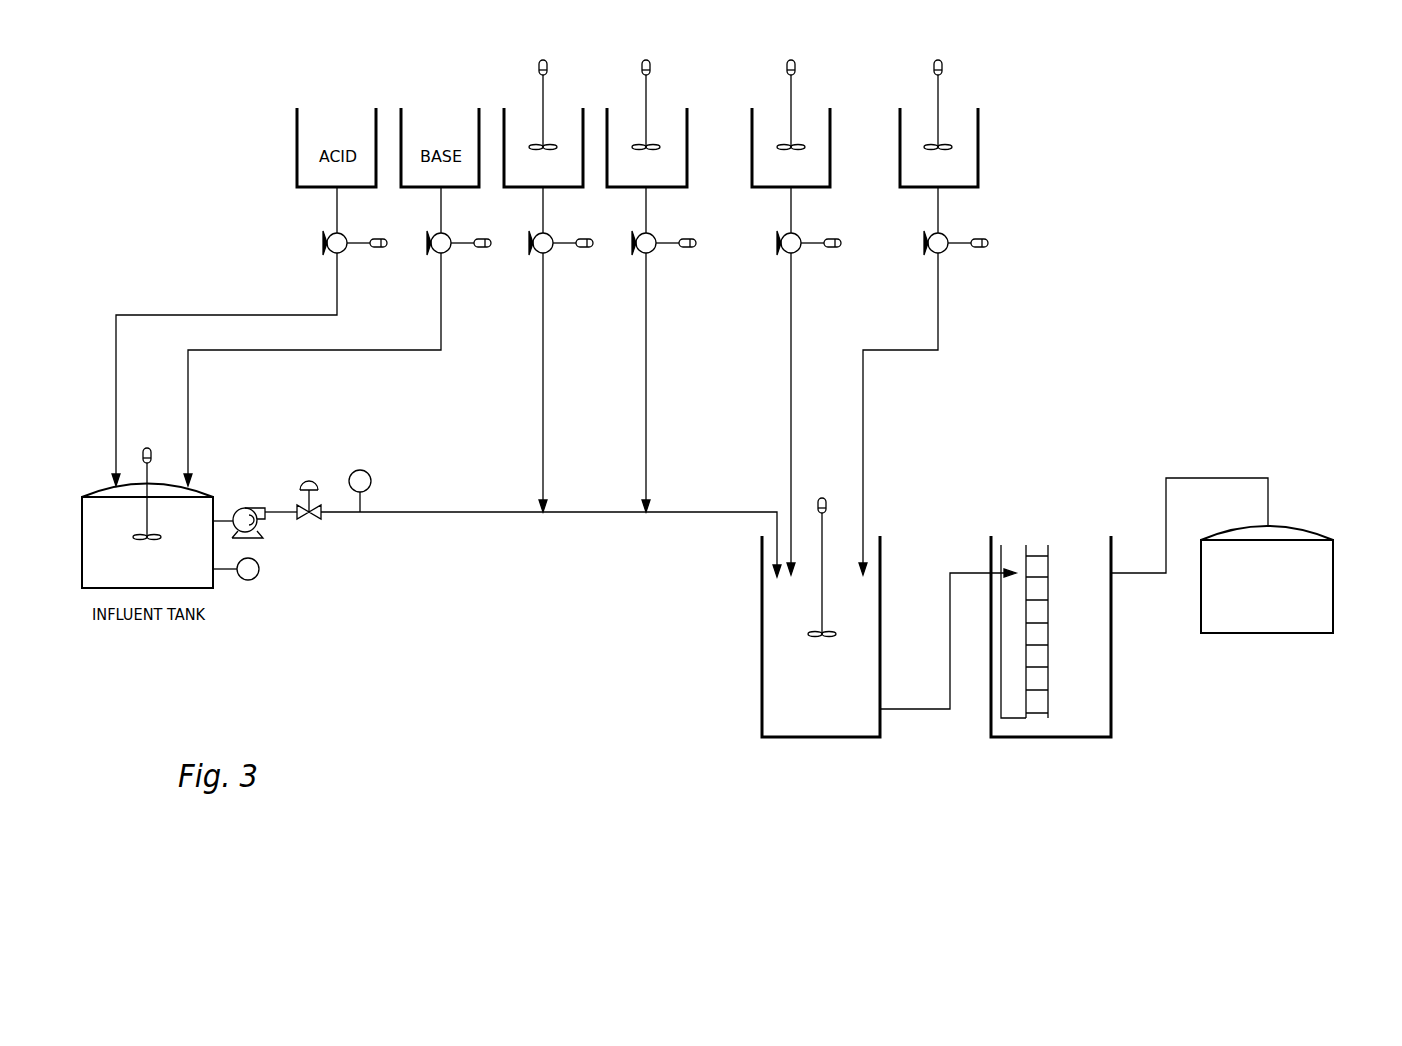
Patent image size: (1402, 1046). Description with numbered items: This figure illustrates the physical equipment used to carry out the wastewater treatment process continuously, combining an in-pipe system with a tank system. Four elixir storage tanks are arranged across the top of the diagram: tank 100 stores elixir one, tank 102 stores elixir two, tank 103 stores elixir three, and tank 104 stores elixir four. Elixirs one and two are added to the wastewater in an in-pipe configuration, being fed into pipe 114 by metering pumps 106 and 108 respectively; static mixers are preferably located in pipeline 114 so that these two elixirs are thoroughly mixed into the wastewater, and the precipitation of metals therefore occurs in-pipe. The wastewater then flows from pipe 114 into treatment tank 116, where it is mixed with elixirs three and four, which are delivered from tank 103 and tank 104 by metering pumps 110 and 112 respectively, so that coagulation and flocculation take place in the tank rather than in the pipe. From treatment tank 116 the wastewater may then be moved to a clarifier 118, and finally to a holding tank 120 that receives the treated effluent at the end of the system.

The tank 100 is at (557, 175).
The tank 102 is at (660, 175).
The tank 103 is at (805, 175).
The tank 104 is at (952, 175).
The metering pump 106 is at (545, 254).
The metering pump 108 is at (648, 254).
The metering pump 110 is at (793, 254).
The metering pump 112 is at (940, 254).
The pipe 114 is at (590, 512).
The treatment tank 116 is at (882, 602).
The clarifier 118 is at (1113, 640).
The holding tank 120 is at (1333, 578).